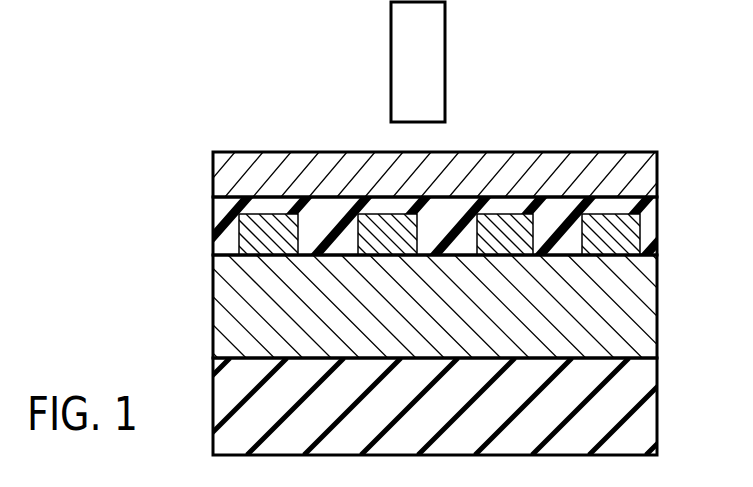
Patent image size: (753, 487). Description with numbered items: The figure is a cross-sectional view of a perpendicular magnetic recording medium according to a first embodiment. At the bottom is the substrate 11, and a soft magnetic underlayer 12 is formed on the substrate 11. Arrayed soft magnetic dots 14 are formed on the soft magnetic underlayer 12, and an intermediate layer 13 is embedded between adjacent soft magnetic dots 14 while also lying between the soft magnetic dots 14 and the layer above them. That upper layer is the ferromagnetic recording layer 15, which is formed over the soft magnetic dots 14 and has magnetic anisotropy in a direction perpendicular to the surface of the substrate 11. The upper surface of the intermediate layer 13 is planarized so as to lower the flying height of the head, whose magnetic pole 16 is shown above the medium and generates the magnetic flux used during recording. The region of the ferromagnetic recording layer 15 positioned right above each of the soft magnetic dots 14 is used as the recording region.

The substrate 11 is at (653, 400).
The soft magnetic underlayer 12 is at (653, 297).
The intermediate layer 13 is at (653, 222).
The soft magnetic dots 14 is at (269, 225).
The ferromagnetic recording layer 15 is at (653, 170).
The magnetic pole 16 is at (442, 50).